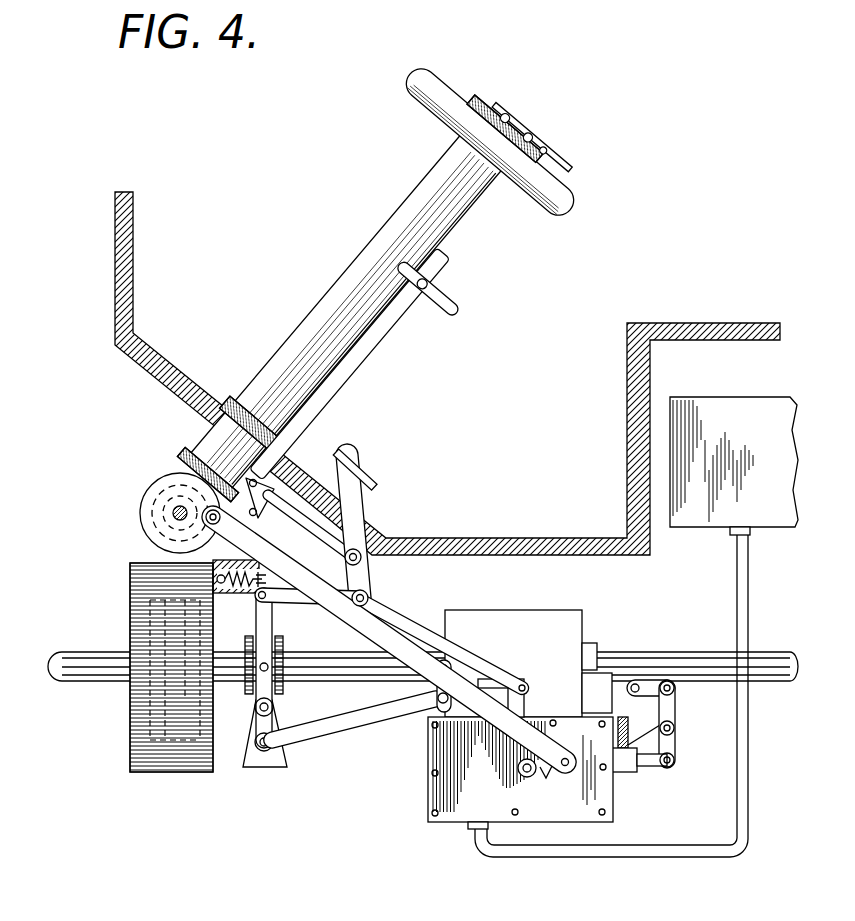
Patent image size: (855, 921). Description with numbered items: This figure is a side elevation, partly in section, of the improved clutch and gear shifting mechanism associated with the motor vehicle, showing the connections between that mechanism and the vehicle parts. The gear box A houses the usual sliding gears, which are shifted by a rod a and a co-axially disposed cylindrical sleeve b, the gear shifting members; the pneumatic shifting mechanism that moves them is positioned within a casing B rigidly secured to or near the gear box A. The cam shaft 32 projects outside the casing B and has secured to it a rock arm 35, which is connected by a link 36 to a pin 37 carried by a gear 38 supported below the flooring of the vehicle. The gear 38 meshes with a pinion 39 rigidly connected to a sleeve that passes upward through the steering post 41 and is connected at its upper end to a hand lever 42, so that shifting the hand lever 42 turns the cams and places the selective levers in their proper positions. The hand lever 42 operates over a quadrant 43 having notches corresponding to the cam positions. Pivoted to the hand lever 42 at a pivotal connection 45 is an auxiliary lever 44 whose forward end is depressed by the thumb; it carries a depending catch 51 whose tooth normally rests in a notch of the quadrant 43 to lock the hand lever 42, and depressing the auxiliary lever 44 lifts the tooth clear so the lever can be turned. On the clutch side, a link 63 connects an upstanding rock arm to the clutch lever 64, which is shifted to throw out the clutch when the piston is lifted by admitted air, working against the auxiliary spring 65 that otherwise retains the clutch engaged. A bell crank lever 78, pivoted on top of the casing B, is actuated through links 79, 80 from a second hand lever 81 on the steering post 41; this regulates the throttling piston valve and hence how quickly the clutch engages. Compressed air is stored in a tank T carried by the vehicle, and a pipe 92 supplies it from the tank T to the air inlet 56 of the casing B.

The cam shaft 32 is at (517, 769).
The rock arm 35 is at (547, 778).
The link 36 is at (363, 620).
The pin 37 is at (206, 524).
The gear 38 is at (155, 500).
The pinion 39 is at (180, 460).
The steering post 41 is at (350, 268).
The hand lever 42 is at (567, 170).
The quadrant 43 is at (477, 117).
The auxiliary lever 44 is at (553, 157).
The pivotal connection 45 is at (528, 133).
The catch 51 is at (545, 148).
The air inlet 56 is at (468, 827).
The link 63 is at (386, 696).
The clutch lever 64 is at (276, 712).
The auxiliary spring 65 is at (232, 588).
The bell crank lever 78 is at (522, 700).
The link 79 is at (403, 610).
The link 80 is at (355, 352).
The hand lever 81 is at (452, 303).
The pipe 92 is at (743, 767).
The gear box A is at (520, 618).
The casing B is at (432, 780).
The storage tank T is at (734, 466).
The rod a is at (622, 688).
The cylindrical sleeve b is at (600, 680).